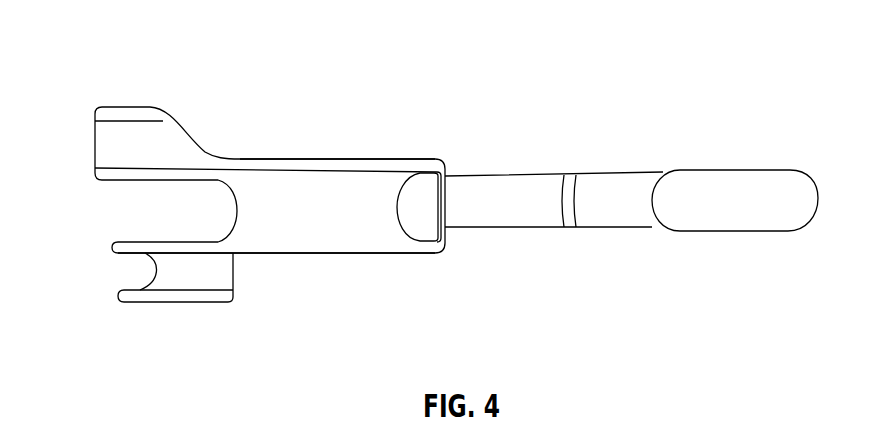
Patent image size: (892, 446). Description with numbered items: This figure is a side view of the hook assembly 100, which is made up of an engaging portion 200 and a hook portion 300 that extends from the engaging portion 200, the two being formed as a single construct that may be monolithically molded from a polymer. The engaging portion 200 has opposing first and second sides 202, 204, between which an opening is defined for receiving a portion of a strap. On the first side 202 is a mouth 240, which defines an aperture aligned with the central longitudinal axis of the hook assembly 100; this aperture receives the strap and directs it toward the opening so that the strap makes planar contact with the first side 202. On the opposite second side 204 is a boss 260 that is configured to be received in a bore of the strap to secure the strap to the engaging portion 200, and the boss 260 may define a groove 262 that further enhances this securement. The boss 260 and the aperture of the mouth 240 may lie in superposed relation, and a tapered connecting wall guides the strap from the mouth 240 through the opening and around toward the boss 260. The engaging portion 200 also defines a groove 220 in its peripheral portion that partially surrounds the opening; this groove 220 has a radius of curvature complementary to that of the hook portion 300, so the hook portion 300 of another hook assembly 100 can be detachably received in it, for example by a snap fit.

The hook assembly 100 is at (568, 98).
The engaging portion 200 is at (210, 164).
The first side 202 is at (330, 165).
The second side 204 is at (287, 251).
The groove 220 is at (362, 229).
The mouth 240 is at (123, 131).
The boss 260 is at (190, 298).
The groove 262 is at (150, 268).
The hook portion 300 is at (707, 188).